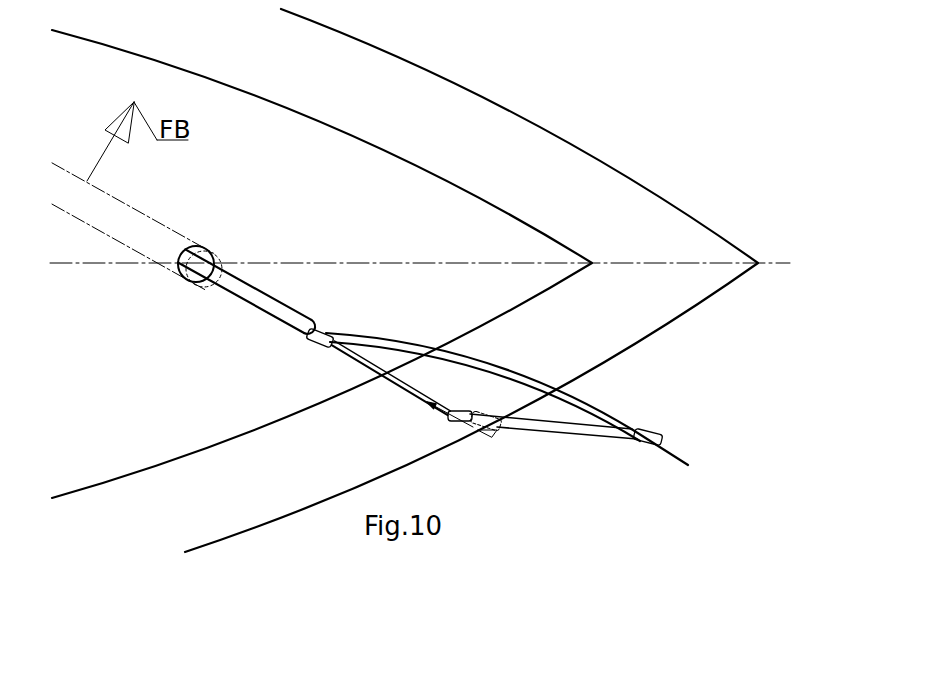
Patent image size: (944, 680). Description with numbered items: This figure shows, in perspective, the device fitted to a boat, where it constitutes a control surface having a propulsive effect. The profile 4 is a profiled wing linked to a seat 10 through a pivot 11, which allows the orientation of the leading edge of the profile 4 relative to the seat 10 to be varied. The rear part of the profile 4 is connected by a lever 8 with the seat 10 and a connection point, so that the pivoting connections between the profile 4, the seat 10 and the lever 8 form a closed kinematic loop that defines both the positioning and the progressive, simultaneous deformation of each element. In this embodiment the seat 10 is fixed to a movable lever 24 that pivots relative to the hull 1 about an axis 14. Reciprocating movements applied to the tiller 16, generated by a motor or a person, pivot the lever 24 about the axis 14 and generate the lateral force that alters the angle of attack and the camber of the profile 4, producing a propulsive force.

The hull 1 is at (540, 190).
The profile 4 is at (592, 403).
The lever 8 is at (549, 429).
The seat 10 is at (468, 424).
The pivot 11 is at (340, 347).
The axis 14 is at (212, 250).
The tiller 16 is at (112, 218).
The movable lever 24 is at (276, 303).